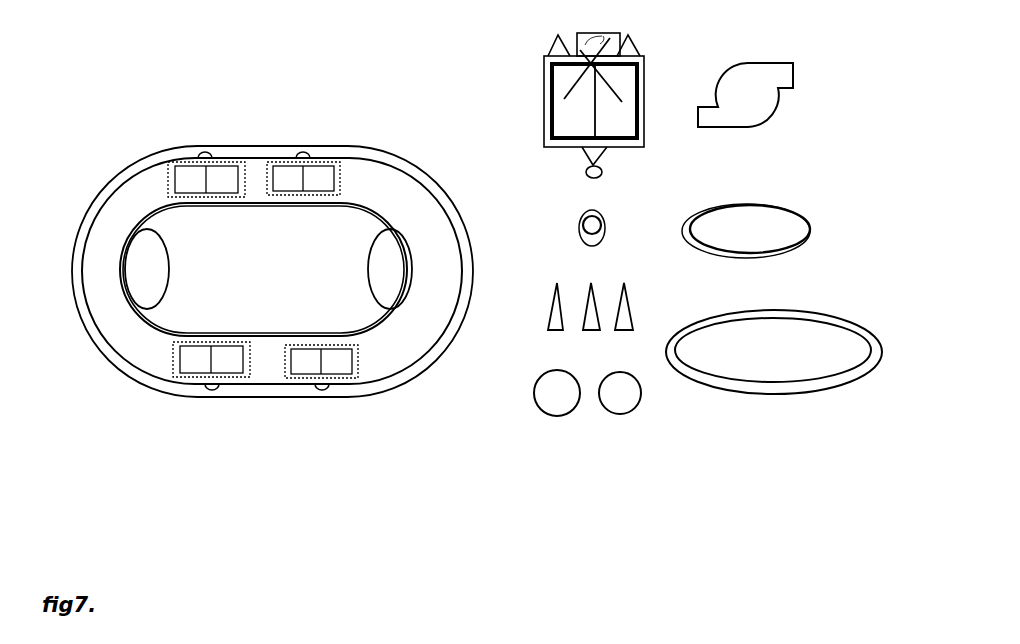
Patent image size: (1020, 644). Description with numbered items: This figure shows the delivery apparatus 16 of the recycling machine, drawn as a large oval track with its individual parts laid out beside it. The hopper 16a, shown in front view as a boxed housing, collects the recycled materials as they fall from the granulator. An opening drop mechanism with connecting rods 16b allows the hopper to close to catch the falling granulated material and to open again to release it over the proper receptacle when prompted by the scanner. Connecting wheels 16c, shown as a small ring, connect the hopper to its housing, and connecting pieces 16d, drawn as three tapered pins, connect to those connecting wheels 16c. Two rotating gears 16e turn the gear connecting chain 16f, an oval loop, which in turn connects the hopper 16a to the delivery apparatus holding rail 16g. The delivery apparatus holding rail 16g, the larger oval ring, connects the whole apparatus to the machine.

The delivery apparatus 16 is at (257, 141).
The hopper 16a is at (543, 113).
The opening drop mechanism with connecting rods 16b is at (720, 73).
The connecting wheels 16c is at (578, 222).
The connecting pieces 16d is at (545, 303).
The rotating gears 16e is at (527, 388).
The gear connecting chain 16f is at (712, 204).
The delivery apparatus holding rail 16g is at (706, 311).